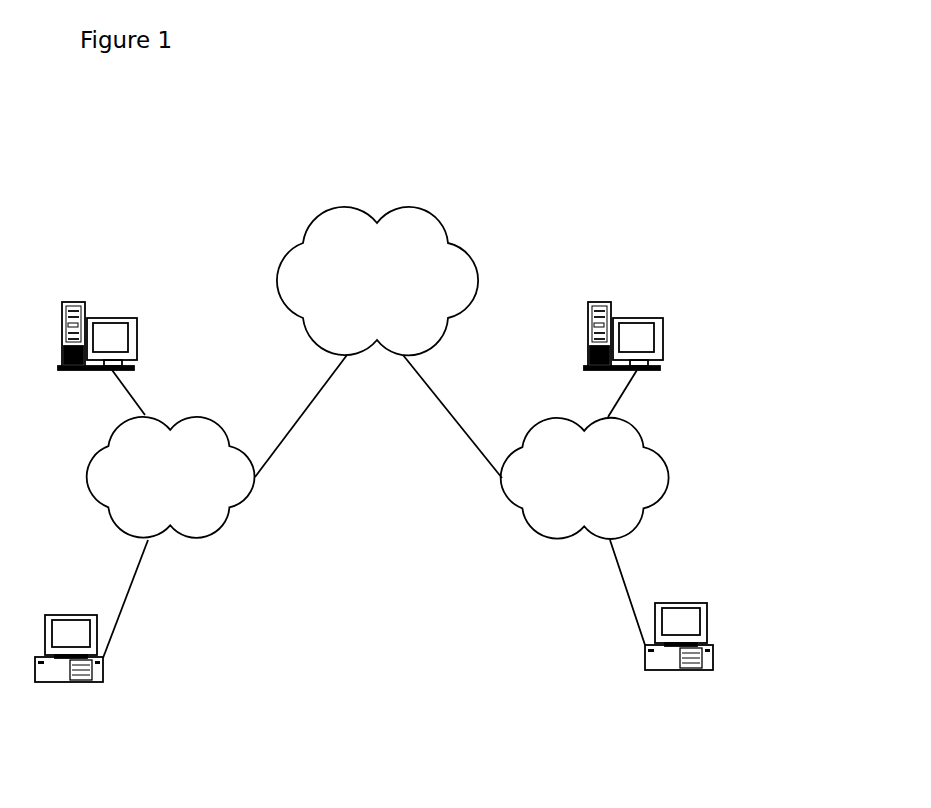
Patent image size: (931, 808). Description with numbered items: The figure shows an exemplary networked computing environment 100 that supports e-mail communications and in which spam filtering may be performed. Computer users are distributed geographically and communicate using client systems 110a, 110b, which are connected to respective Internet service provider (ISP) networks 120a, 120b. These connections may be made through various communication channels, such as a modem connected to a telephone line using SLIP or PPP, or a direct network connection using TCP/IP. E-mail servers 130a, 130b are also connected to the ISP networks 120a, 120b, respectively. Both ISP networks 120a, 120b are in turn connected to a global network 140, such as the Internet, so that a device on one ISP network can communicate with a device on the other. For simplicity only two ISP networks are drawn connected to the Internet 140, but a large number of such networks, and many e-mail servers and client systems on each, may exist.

The networked computing environment 100 is at (593, 130).
The global network 140 is at (347, 207).
The ISP network 120a is at (195, 540).
The ISP network 120b is at (562, 542).
The e-mail server 130a is at (110, 317).
The e-mail server 130b is at (638, 317).
The client system 110a is at (70, 682).
The client system 110b is at (717, 648).